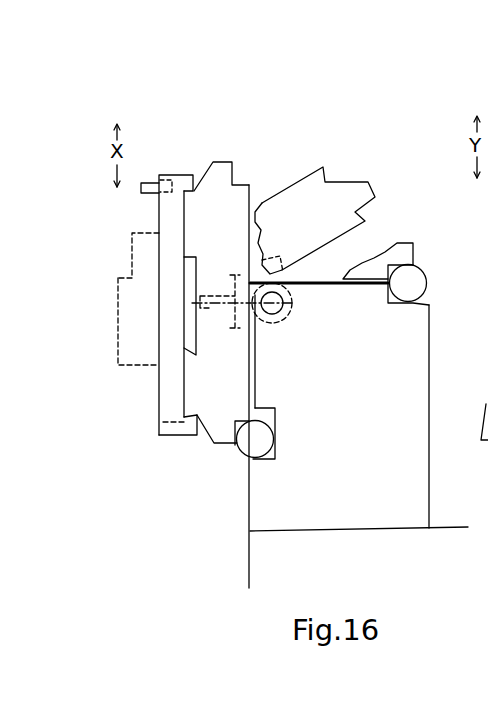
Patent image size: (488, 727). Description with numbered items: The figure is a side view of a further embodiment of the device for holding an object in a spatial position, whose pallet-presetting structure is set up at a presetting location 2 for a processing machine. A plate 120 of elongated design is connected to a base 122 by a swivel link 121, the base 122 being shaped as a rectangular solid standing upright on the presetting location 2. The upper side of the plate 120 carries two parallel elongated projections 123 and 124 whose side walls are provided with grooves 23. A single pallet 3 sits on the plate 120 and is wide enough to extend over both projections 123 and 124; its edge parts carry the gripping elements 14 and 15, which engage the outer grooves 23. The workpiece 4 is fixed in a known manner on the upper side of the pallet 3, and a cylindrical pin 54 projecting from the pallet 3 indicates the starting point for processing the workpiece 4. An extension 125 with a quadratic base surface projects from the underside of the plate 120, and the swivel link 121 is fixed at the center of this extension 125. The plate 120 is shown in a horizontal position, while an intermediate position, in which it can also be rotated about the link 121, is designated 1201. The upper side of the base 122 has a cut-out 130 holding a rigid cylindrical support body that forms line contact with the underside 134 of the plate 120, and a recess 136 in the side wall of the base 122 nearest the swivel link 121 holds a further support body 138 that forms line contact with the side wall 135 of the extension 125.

The presetting location 2 is at (359, 550).
The pallet 3 is at (172, 325).
The workpiece 4 is at (138, 308).
The gripping element 14 is at (194, 176).
The gripping element 15 is at (173, 435).
The grooves 23 is at (188, 207).
The cylindrical pin 54 is at (143, 187).
The plate 120 is at (213, 163).
The swivel link 121 is at (283, 308).
The base 122 is at (363, 425).
The elongated projection 123 is at (192, 222).
The elongated projection 124 is at (190, 386).
The extension 125 is at (251, 204).
The cut-out 130 is at (414, 304).
The underside of the plate 134 is at (372, 201).
The side wall of the extension 135 is at (243, 217).
The recess 136 is at (268, 416).
The support body 138 is at (248, 443).
The intermediate position of the plate 1201 is at (322, 210).